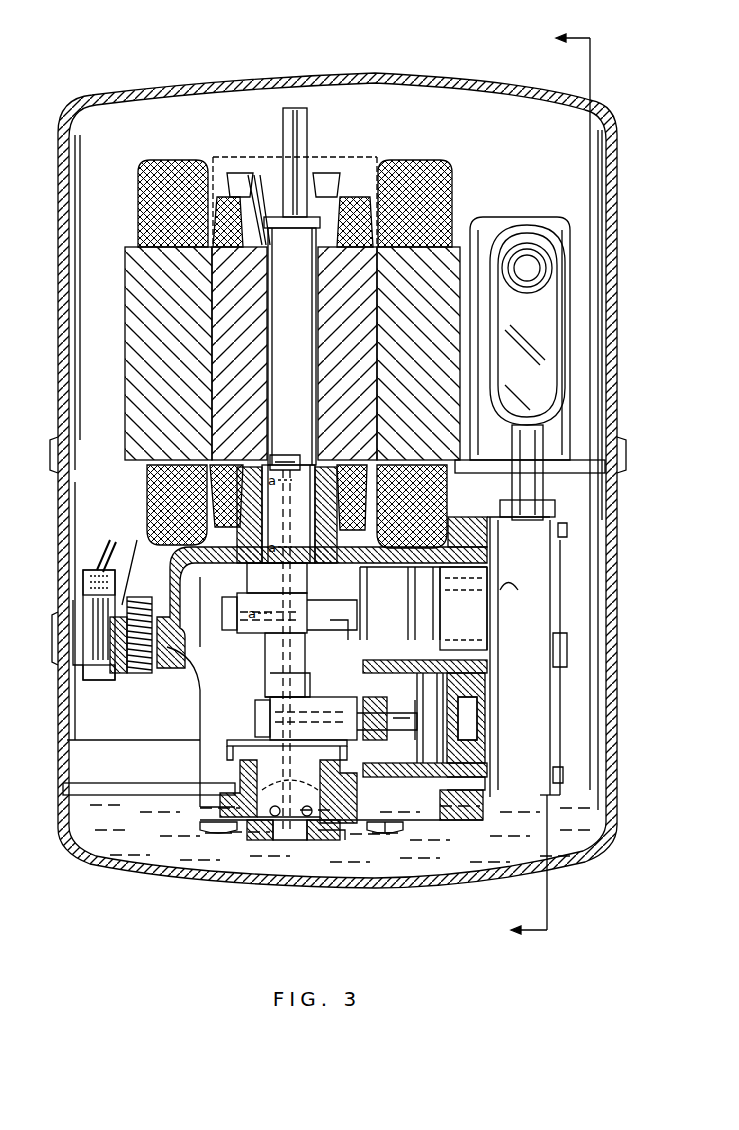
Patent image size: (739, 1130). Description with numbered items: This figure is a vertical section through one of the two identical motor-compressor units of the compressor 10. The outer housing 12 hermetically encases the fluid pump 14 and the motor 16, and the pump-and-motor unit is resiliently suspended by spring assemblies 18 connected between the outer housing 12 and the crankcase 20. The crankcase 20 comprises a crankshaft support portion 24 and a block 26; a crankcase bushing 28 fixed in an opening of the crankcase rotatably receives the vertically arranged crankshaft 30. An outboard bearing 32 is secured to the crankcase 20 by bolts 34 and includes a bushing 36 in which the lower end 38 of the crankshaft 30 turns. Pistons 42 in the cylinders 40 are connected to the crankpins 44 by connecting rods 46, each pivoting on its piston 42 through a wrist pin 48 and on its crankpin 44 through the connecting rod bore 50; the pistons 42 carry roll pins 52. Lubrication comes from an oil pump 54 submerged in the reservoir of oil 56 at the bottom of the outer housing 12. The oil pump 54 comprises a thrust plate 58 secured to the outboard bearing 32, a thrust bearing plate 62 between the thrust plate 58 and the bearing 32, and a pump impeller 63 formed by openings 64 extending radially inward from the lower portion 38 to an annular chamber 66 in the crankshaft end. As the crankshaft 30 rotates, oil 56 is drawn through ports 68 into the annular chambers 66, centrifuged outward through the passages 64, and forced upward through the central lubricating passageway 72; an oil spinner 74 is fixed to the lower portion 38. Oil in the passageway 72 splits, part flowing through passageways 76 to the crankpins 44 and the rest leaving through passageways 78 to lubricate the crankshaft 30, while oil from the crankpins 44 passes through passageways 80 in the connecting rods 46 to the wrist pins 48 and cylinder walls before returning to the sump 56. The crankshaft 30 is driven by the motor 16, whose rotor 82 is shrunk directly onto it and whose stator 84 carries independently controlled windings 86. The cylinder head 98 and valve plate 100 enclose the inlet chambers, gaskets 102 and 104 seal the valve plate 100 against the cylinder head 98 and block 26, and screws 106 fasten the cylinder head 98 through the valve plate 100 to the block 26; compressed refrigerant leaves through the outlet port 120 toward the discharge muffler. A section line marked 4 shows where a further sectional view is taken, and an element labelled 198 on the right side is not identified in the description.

The compressor 10 is at (505, 82).
The section line 4- 4 is at (562, 498).
The outer housing 12 is at (618, 128).
The fluid pump 14 is at (135, 535).
The motor 16 is at (458, 230).
The spring assemblies 18 is at (130, 674).
The crankcase 20 is at (193, 663).
The crankshaft support portion 24 is at (232, 560).
The block 26 is at (490, 557).
The crankcase bushing 28 is at (247, 472).
The crankshaft 30 is at (332, 225).
The outboard bearing 32 is at (213, 818).
The bolts 34 is at (210, 830).
The bushing 36 is at (245, 764).
The lower end of crankshaft 38 is at (232, 789).
The cylinders 40 is at (444, 594).
The pistons 42 is at (430, 600).
The crankpins 44 is at (227, 607).
The connecting rods 46 is at (333, 625).
The wrist pin 48 is at (446, 663).
The connecting rod bore 50 is at (207, 622).
The roll pins 52 is at (515, 752).
The oil pump 54 is at (290, 842).
The oil 56 is at (97, 852).
The thrust plate 58 is at (247, 837).
The thrust bearing plate 62 is at (365, 835).
The pump impeller 63 is at (313, 843).
The openings 64 is at (318, 840).
The annular chamber 66 is at (303, 837).
The ports 68 is at (270, 838).
The central lubricating passageway 72 is at (288, 788).
The oil spinner 74 is at (222, 742).
The passageways 76 is at (226, 642).
The passageways 78 is at (287, 462).
The passageways 80 is at (342, 612).
The rotor 82 is at (377, 328).
The stator 84 is at (138, 373).
The windings 86 is at (412, 170).
The cylinder head 98 is at (552, 727).
The valve plate 100 is at (490, 805).
The gasket 102 is at (490, 632).
The gasket 104 is at (519, 598).
The screws 106 is at (567, 537).
The outlet port 120 is at (538, 440).
The suction accumulator 198 is at (565, 345).